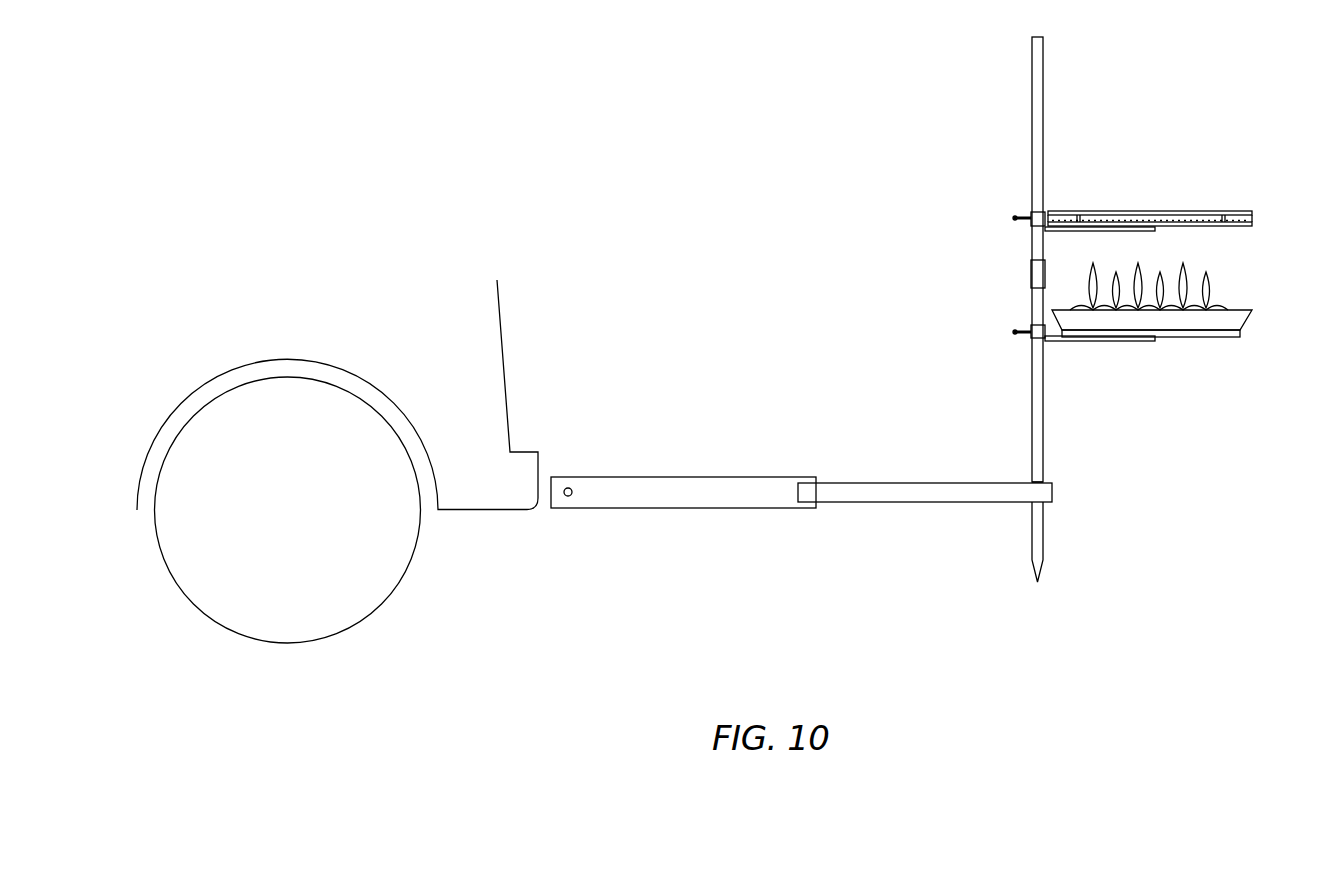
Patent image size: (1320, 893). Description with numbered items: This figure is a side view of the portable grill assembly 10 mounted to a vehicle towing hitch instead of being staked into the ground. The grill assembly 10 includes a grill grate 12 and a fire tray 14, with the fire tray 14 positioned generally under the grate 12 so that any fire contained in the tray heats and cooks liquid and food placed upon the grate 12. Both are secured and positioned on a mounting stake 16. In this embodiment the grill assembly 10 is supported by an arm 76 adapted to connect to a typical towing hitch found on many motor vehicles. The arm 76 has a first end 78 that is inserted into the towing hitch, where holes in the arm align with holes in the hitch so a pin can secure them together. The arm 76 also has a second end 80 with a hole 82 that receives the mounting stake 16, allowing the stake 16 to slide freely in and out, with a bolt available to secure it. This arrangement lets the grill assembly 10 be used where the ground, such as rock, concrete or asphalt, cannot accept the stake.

The portable grill assembly 10 is at (1038, 50).
The grill grate 12 is at (1223, 225).
The fire tray 14 is at (1195, 328).
The mounting stake 16 is at (1035, 150).
The arm 76 is at (748, 490).
The first end 78 is at (595, 486).
The second end 80 is at (958, 495).
The hole 82 is at (1022, 455).